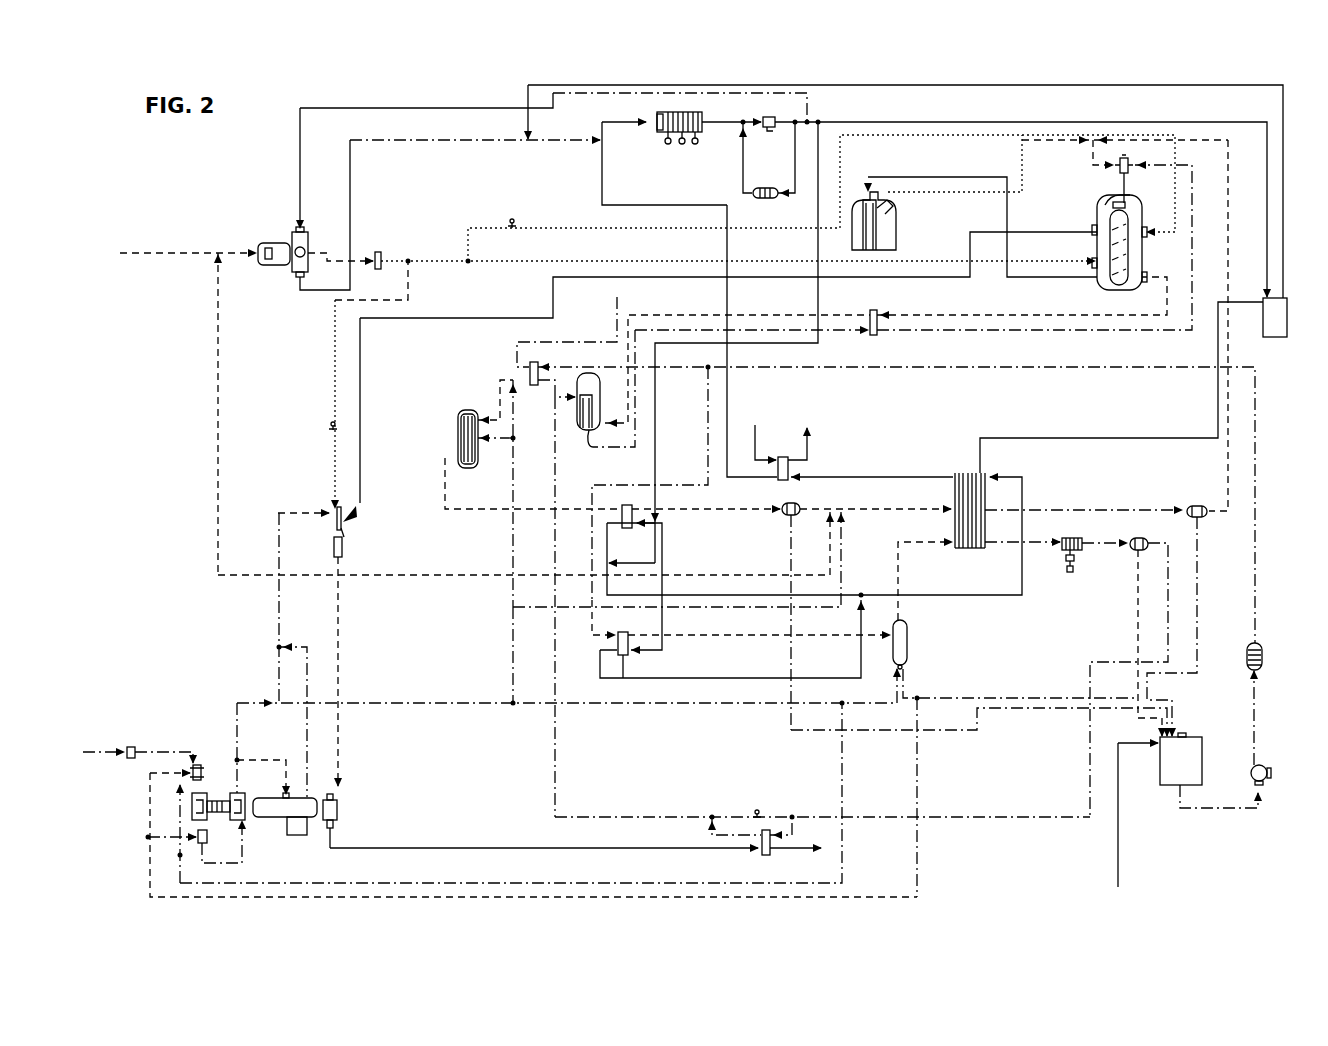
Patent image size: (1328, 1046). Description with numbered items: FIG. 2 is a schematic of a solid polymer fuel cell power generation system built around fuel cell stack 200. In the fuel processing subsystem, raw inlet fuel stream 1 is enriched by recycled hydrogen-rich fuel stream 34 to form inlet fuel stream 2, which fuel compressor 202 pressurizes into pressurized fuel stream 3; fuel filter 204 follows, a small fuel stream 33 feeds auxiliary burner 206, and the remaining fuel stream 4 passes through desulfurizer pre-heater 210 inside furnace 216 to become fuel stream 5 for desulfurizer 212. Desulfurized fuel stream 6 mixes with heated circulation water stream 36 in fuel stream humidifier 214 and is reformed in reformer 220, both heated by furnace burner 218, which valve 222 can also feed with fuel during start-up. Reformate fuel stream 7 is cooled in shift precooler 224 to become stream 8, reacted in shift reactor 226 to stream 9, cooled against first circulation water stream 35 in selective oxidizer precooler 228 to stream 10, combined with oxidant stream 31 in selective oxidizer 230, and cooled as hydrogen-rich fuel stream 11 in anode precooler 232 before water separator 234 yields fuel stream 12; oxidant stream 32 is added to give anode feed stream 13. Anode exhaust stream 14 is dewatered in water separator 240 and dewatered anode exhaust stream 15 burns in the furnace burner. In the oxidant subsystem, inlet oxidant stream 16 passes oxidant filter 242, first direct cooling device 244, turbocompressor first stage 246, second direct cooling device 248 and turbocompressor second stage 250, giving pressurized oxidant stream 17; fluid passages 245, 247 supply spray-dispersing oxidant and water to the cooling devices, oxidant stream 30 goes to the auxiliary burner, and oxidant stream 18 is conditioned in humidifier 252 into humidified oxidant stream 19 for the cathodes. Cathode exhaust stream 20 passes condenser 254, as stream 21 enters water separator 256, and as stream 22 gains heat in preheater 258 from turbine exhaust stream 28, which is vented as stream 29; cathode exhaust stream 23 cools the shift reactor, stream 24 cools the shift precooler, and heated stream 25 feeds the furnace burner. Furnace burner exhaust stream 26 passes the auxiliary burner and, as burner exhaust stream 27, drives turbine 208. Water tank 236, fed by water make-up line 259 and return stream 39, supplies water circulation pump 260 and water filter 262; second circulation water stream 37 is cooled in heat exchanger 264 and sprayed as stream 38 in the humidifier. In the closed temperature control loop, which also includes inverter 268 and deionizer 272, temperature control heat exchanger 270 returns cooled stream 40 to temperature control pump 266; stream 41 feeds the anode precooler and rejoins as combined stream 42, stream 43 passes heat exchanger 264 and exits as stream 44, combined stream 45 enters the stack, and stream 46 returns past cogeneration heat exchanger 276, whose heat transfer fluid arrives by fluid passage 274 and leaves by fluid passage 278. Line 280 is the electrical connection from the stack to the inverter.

The raw inlet fuel stream 1 is at (150, 249).
The hydrogen-enriched inlet fuel stream 2 is at (230, 249).
The pressurized fuel stream 3 is at (322, 249).
The fuel stream 4 is at (1048, 262).
The pressurized fuel stream 5 is at (910, 172).
The desulfurized fuel stream 6 is at (968, 198).
The reformate fuel stream 7 is at (1173, 312).
The reformate fuel stream 8 is at (603, 420).
The reformate fuel stream 9 is at (558, 396).
The reformate fuel stream 10 is at (492, 414).
The hydrogen-rich fuel stream 11 is at (474, 504).
The hydrogen-rich fuel stream 12 is at (803, 510).
The hydrogen-rich fuel stream 13 is at (863, 510).
The anode exhaust stream 14 is at (1130, 508).
The dewatered anode exhaust stream 15 is at (1226, 464).
The inlet oxidant stream 16 is at (100, 749).
The pressurized oxidant stream 17 is at (240, 701).
The pressurized oxidant stream 18 is at (682, 706).
The humidified oxidant stream 19 is at (917, 545).
The cathode exhaust stream 20 is at (1000, 545).
The cathode exhaust stream 21 is at (1111, 548).
The cathode exhaust stream 22 is at (1095, 657).
The cathode exhaust stream 23 is at (602, 812).
The cathode exhaust stream 24 is at (616, 448).
The cathode exhaust stream 25 is at (1165, 343).
The furnace burner exhaust stream 26 is at (1046, 229).
The burner exhaust stream 27 is at (343, 628).
The turbine exhaust stream 28 is at (389, 846).
The turbine exhaust stream 29 is at (812, 850).
The oxidant stream 30 is at (286, 510).
The oxidant stream 31 is at (512, 534).
The oxidant stream 32 is at (516, 614).
The fuel stream 33 is at (398, 288).
The recycled hydrogen-rich fuel stream 34 is at (255, 571).
The first circulation water stream 35 is at (591, 359).
The heated circulation water stream 36 is at (588, 338).
The second circulation water stream 37 is at (589, 631).
The circulation water stream 38 is at (650, 632).
The excess humidification water stream 39 is at (992, 697).
The cooled temperature control fluid stream 40 is at (728, 128).
The temperature control fluid stream 41 is at (805, 112).
The combined temperature control fluid stream 42 is at (608, 578).
The temperature control fluid stream 43 is at (663, 644).
The temperature control fluid stream 44 is at (600, 668).
The combined temperature control fluid stream 45 is at (972, 588).
The temperature control fluid stream 46 is at (894, 474).
The fuel cell stack 200 is at (961, 469).
The fuel compressor 202 is at (280, 243).
The fuel filter 204 is at (372, 250).
The auxiliary burner 206 is at (343, 532).
The turbine 208 is at (340, 788).
The desulfurizer pre-heater 210 is at (1127, 260).
The desulfurizer 212 is at (883, 222).
The fuel stream humidifier 214 is at (1123, 238).
The furnace 216 is at (1113, 205).
The furnace burner 218 is at (1113, 170).
The reformer 220 is at (1132, 205).
The valve 222 is at (508, 212).
The shift precooler 224 is at (868, 336).
The shift reactor 226 is at (587, 431).
The selective oxidizer precooler 228 is at (528, 376).
The selective oxidizer 230 is at (458, 434).
The anode precooler 232 is at (627, 528).
The water separator 234 is at (793, 526).
The water tank 236 is at (1204, 734).
The water separator 240 is at (1204, 519).
The oxidant filter 242 is at (136, 747).
The first direct cooling device 244 is at (195, 757).
The fluid passage 245 is at (184, 807).
The turbocompressor first stage 246 is at (207, 797).
The fluid passage 247 is at (180, 855).
The second direct cooling device 248 is at (223, 832).
The turbocompressor second stage 250 is at (268, 796).
The humidifier 252 is at (908, 630).
The condenser 254 is at (1090, 531).
The water separator 256 is at (1155, 530).
The preheater 258 is at (780, 865).
The water make-up line 259 is at (1120, 804).
The water circulation pump 260 is at (1254, 772).
The water filter 262 is at (1250, 645).
The heat exchanger 264 is at (618, 656).
The temperature control pump 266 is at (774, 134).
The inverter 268 is at (1275, 338).
The temperature control heat exchanger 270 is at (660, 135).
The deionizer 272 is at (766, 198).
The fluid passage 274 is at (756, 444).
The cogeneration heat exchanger 276 is at (789, 468).
The fluid passage 278 is at (806, 446).
The line 280 is at (1070, 434).